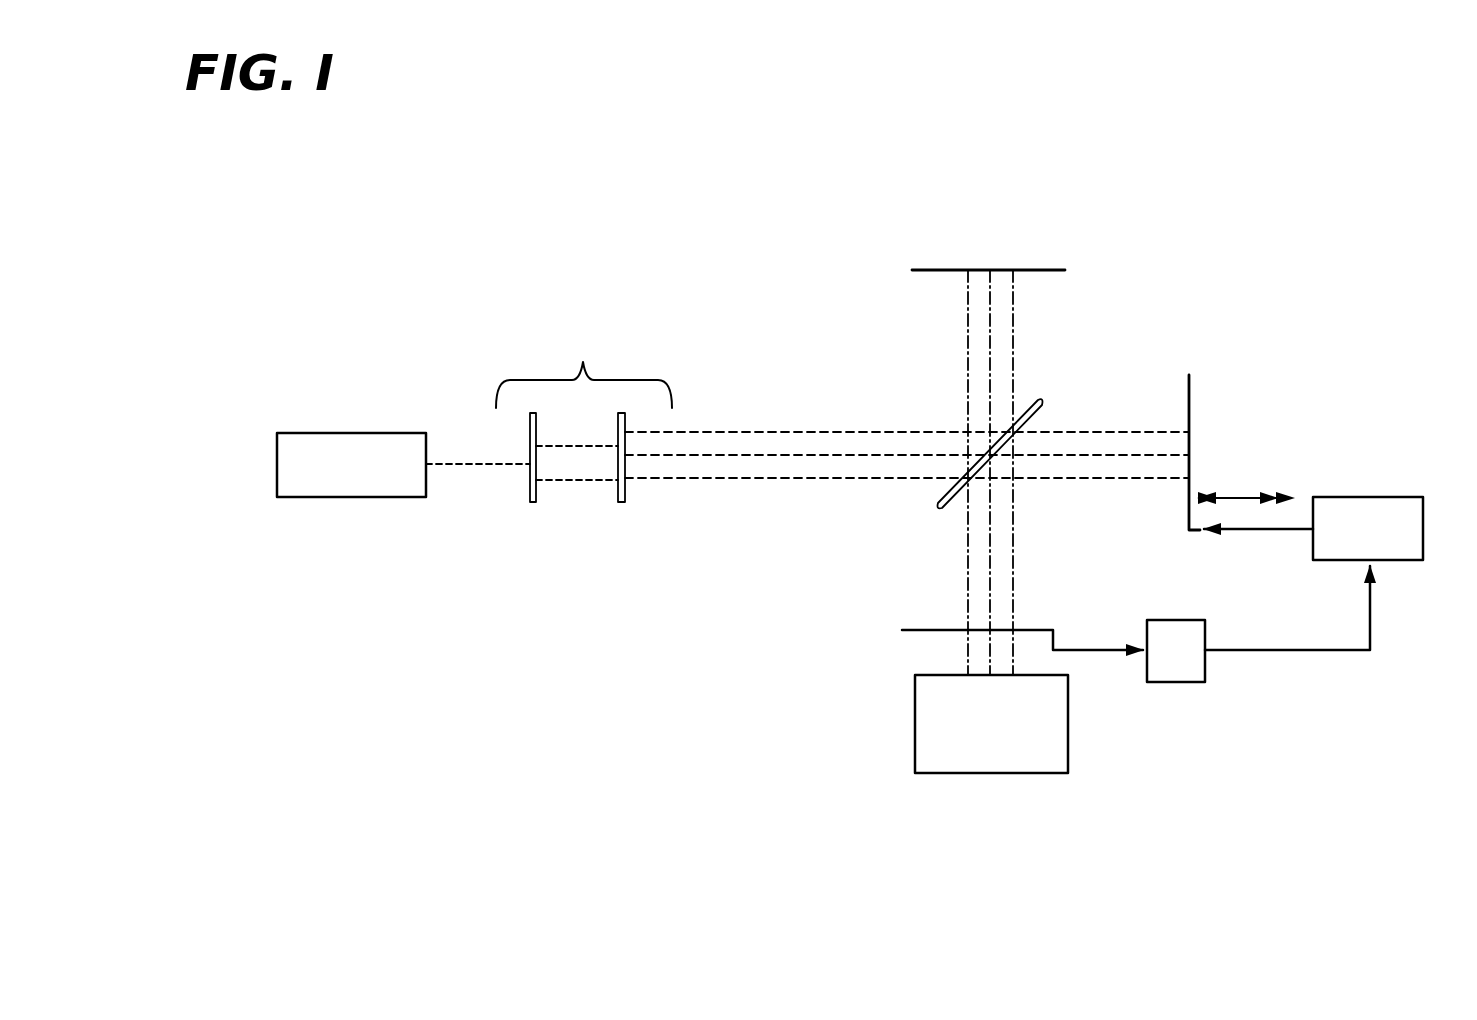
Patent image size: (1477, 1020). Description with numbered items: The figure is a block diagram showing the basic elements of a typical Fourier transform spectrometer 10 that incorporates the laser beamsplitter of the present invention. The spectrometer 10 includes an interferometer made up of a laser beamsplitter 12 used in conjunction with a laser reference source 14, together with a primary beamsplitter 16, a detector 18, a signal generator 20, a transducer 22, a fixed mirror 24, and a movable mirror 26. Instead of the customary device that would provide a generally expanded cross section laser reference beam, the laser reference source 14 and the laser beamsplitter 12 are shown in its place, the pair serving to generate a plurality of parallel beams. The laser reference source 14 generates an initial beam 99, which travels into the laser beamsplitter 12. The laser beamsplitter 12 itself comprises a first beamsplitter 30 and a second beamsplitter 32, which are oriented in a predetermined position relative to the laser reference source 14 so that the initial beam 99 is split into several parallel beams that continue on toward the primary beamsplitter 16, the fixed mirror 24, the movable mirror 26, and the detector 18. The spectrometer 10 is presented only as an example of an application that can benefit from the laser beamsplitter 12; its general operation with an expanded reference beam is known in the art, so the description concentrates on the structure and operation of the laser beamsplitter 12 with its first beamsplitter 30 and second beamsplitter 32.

The Fourier transform spectrometer 10 is at (1004, 160).
The laser beamsplitter 12 is at (588, 346).
The laser reference source 14 is at (354, 424).
The primary beamsplitter 16 is at (1046, 418).
The detector 18 is at (985, 786).
The signal generator 20 is at (1182, 696).
The transducer 22 is at (1370, 484).
The fixed mirror 24 is at (1052, 250).
The movable mirror 26 is at (1204, 398).
The first beamsplitter 30 is at (512, 508).
The second beamsplitter 32 is at (617, 508).
The initial beam 99 is at (472, 448).